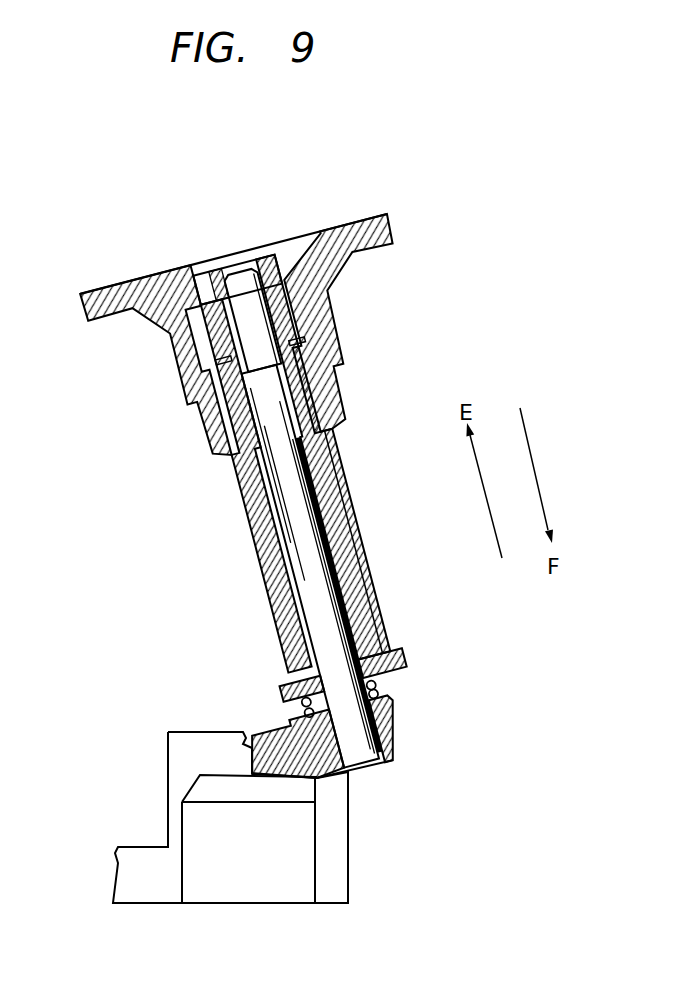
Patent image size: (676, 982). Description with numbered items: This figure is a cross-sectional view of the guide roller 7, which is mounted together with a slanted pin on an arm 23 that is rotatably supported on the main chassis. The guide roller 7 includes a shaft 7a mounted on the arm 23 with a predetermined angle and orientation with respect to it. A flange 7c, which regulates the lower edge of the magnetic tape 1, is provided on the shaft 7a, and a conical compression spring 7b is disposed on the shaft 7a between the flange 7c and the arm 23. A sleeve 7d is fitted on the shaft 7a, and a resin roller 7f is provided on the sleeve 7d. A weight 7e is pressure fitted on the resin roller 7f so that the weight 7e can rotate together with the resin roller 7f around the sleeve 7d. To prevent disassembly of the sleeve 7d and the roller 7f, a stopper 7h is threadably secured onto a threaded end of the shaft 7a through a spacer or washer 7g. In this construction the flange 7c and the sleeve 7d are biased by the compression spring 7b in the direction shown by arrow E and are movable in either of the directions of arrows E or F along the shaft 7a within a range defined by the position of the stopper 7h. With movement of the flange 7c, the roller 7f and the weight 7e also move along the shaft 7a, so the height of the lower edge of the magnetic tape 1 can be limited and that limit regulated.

The magnetic tape 1 is at (396, 615).
The guide roller 7 is at (176, 228).
The shaft 7a is at (354, 757).
The conical compression spring 7b is at (382, 693).
The flange 7c is at (278, 690).
The sleeve 7d is at (333, 541).
The weight 7e is at (95, 293).
The resin roller 7f is at (256, 516).
The spacer or washer 7g is at (303, 340).
The stopper 7h is at (275, 285).
The arm 23 is at (168, 732).